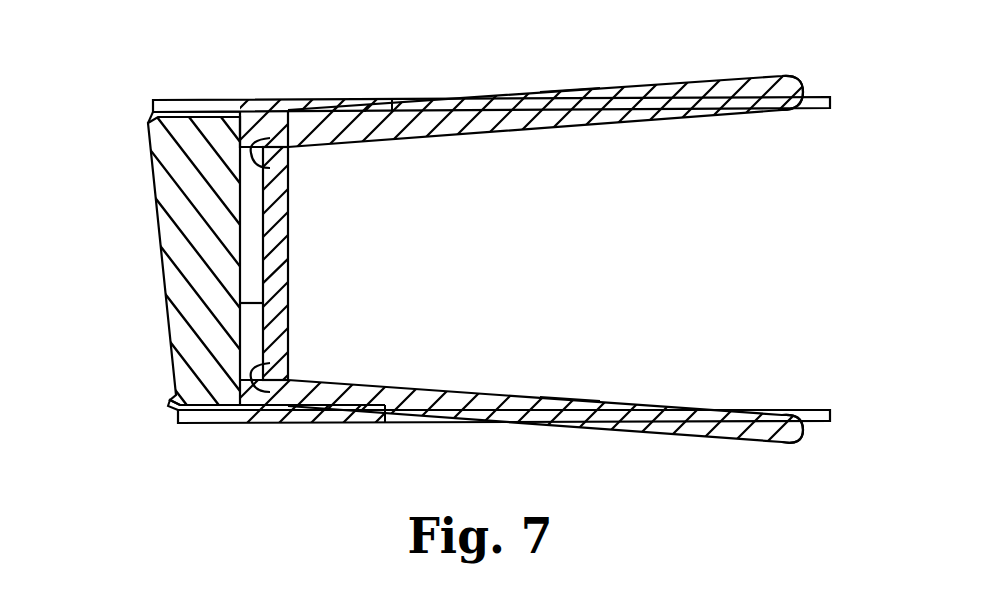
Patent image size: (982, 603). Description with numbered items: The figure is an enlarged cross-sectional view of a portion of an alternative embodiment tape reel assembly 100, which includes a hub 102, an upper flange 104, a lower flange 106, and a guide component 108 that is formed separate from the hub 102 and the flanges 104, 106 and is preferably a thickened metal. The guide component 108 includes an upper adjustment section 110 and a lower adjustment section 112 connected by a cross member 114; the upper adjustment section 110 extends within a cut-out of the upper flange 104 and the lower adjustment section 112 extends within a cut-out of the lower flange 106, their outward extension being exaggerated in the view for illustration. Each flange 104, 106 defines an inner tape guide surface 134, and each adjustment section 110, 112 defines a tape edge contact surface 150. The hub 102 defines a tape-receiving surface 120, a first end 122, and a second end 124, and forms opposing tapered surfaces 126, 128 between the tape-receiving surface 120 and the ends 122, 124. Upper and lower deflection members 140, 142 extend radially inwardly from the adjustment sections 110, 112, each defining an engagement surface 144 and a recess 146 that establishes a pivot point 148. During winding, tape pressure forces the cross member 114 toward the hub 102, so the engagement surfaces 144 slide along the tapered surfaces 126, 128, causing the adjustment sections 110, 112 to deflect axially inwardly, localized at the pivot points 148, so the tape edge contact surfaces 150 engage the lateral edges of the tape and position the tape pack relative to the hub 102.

The tape reel assembly 100 is at (382, 24).
The hub 102 is at (158, 255).
The upper flange 104 is at (452, 94).
The lower flange 106 is at (454, 434).
The guide component 108 is at (454, 258).
The upper adjustment section 110 is at (572, 90).
The lower adjustment section 112 is at (587, 432).
The cross member 114 is at (290, 271).
The tape-receiving surface 120 is at (288, 303).
The first end 122 is at (150, 125).
The second end 124 is at (169, 401).
The tapered surface 126 is at (240, 100).
The tapered surface 128 is at (238, 410).
The tape guide surface 134 is at (762, 112).
The upper deflection member 140 is at (282, 95).
The lower deflection member 142 is at (272, 418).
The engagement surface 144 is at (248, 141).
The recess 146 is at (260, 164).
The pivot point 148 is at (338, 99).
The tape edge contact surface 150 is at (582, 120).